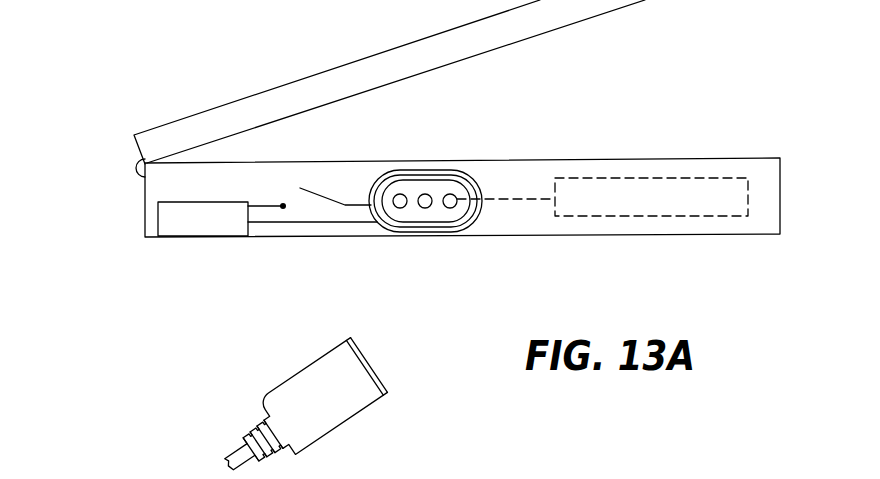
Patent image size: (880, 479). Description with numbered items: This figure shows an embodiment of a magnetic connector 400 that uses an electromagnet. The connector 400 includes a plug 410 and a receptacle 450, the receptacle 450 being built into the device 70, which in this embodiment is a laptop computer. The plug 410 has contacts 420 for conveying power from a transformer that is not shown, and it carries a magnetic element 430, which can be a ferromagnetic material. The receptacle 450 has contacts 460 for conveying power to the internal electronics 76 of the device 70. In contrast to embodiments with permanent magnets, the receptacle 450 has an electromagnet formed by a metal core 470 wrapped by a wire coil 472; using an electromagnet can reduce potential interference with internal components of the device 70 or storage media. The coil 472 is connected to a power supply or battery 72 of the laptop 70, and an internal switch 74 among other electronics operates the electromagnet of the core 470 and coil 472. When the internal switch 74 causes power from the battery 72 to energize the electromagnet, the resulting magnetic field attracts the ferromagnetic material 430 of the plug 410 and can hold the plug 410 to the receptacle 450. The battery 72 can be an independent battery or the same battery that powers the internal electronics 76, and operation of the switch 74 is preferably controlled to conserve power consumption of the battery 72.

The device 70 is at (333, 38).
The magnetic connector 400 is at (100, 214).
The battery 72 is at (197, 238).
The internal switch 74 is at (327, 181).
The internal electronics 76 is at (643, 177).
The receptacle 450 is at (371, 251).
The contacts 460 is at (450, 193).
The metal core 470 is at (433, 227).
The wire coil 472 is at (467, 231).
The plug 410 is at (284, 370).
The contacts 420 is at (398, 357).
The magnetic element 430 is at (392, 392).